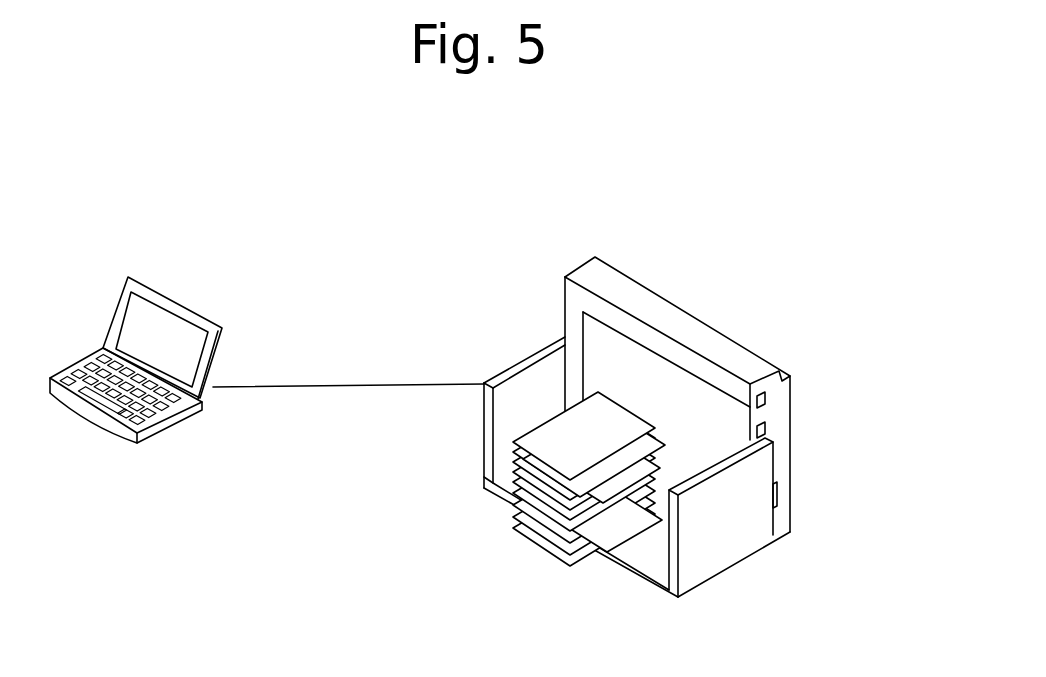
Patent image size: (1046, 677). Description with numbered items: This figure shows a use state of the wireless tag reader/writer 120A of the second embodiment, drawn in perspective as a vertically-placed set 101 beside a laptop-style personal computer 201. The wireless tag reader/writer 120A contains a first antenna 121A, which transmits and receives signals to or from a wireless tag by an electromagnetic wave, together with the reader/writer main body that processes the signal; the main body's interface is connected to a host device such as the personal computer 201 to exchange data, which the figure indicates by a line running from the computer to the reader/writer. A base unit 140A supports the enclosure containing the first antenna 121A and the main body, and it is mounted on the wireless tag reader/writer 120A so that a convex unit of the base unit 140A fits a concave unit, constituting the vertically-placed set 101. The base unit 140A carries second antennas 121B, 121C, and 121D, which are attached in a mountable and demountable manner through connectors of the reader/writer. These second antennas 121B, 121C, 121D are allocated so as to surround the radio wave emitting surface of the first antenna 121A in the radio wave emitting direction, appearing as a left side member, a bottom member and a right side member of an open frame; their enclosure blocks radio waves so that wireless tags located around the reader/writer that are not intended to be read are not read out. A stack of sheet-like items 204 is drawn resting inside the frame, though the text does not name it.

The vertically-placed set 101 is at (636, 429).
The base unit 140A is at (590, 429).
The wireless tag reader/writer 120A is at (720, 330).
The first antenna 121A is at (612, 352).
The second antenna 121B is at (523, 364).
The second antenna 121C is at (632, 565).
The second antenna 121D is at (702, 528).
The sheets (recording media) 204 is at (515, 513).
The personal computer 201 is at (195, 328).